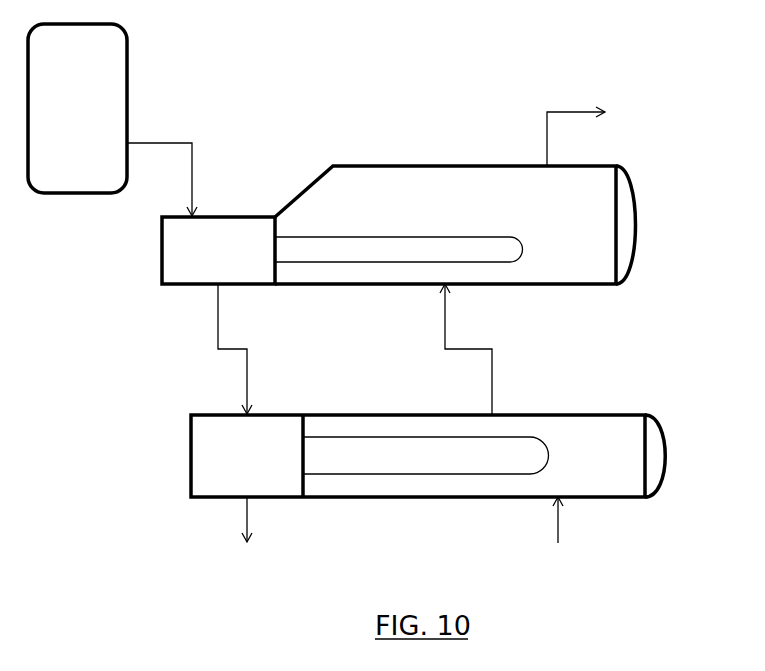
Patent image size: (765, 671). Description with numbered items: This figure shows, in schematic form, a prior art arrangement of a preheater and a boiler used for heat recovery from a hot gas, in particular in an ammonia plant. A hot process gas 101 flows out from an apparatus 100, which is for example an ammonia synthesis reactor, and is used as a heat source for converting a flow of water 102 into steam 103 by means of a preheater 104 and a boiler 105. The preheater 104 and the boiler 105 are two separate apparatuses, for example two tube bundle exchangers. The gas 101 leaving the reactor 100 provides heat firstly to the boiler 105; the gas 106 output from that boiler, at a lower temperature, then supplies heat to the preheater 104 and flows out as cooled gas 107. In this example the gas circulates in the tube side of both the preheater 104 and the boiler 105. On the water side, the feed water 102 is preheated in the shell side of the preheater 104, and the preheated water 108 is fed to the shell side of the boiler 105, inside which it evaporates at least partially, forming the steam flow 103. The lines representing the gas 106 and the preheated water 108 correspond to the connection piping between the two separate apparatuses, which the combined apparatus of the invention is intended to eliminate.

The apparatus 100 is at (127, 72).
The hot process gas 101 is at (180, 141).
The flow of water 102 is at (559, 541).
The steam 103 is at (608, 132).
The preheater 104 is at (447, 497).
The boiler 105 is at (388, 165).
The gas output from the boiler 106 is at (215, 313).
The cooled gas 107 is at (247, 541).
The preheated water 108 is at (492, 383).